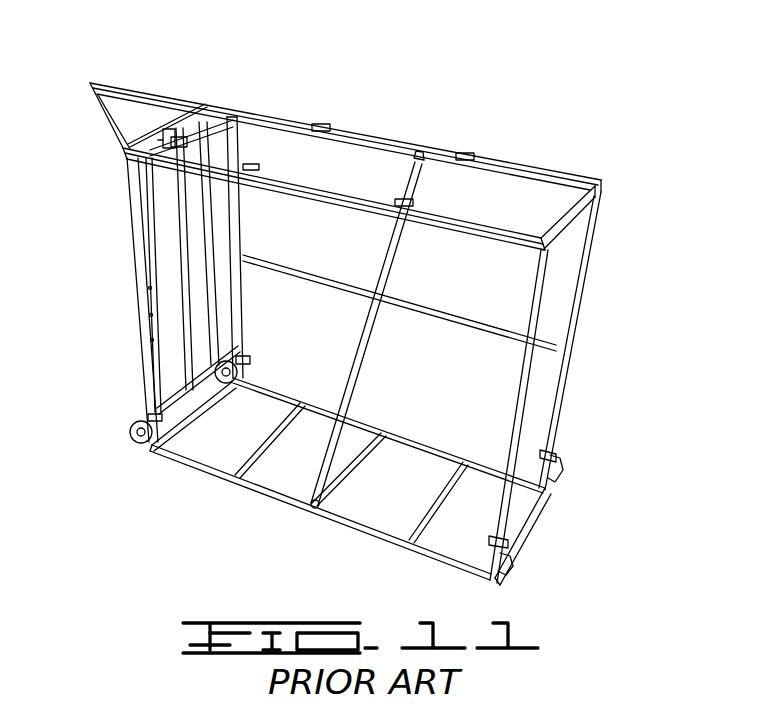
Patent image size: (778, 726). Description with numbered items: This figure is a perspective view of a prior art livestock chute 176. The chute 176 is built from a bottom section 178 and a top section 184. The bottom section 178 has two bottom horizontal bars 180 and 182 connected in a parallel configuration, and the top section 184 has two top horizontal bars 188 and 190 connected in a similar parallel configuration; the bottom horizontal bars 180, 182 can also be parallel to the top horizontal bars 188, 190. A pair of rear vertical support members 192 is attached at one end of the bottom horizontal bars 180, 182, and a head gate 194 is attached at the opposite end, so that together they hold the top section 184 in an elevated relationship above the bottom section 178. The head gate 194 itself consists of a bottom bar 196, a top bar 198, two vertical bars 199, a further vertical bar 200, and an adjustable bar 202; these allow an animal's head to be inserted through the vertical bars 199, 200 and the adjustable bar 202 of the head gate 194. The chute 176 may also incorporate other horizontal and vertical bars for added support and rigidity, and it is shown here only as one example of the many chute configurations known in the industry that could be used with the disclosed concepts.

The chute 176 is at (588, 61).
The bottom section 178 is at (527, 512).
The bottom horizontal bar 180 is at (400, 435).
The bottom horizontal bar 182 is at (360, 534).
The top section 184 is at (352, 157).
The top horizontal bar 188 is at (566, 172).
The top horizontal bar 190 is at (473, 222).
The rear vertical support members 192 is at (588, 272).
The head gate 194 is at (137, 222).
The bottom bar 196 is at (177, 387).
The top bar 198 is at (215, 137).
The vertical bars 199 is at (240, 228).
The vertical bar 200 is at (213, 312).
The adjustable bar 202 is at (175, 253).